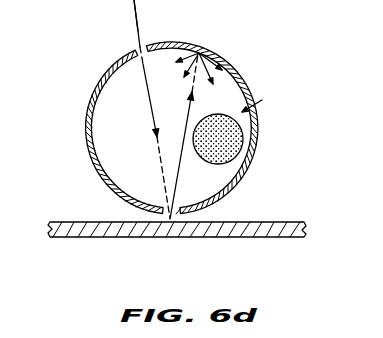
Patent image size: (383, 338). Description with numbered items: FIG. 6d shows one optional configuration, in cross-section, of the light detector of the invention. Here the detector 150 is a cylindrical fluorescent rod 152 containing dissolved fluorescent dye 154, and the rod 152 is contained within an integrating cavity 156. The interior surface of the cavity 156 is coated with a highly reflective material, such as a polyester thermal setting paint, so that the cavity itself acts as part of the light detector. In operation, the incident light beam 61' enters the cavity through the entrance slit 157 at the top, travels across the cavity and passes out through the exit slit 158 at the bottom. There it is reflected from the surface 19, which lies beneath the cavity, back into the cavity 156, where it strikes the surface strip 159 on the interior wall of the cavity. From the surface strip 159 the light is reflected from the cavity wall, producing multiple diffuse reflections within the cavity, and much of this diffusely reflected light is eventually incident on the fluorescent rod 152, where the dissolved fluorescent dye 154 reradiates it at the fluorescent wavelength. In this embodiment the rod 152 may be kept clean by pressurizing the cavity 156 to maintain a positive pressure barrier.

The surface 19 is at (258, 222).
The incident light beam 61' is at (115, 21).
The detector 150 is at (262, 100).
The cylindrical fluorescent rod 152 is at (243, 128).
The dissolved fluorescent dye 154 is at (230, 147).
The integrating cavity 156 is at (86, 136).
The entrance slit 157 is at (141, 46).
The exit slit 158 is at (168, 213).
The surface strip 159 is at (202, 52).